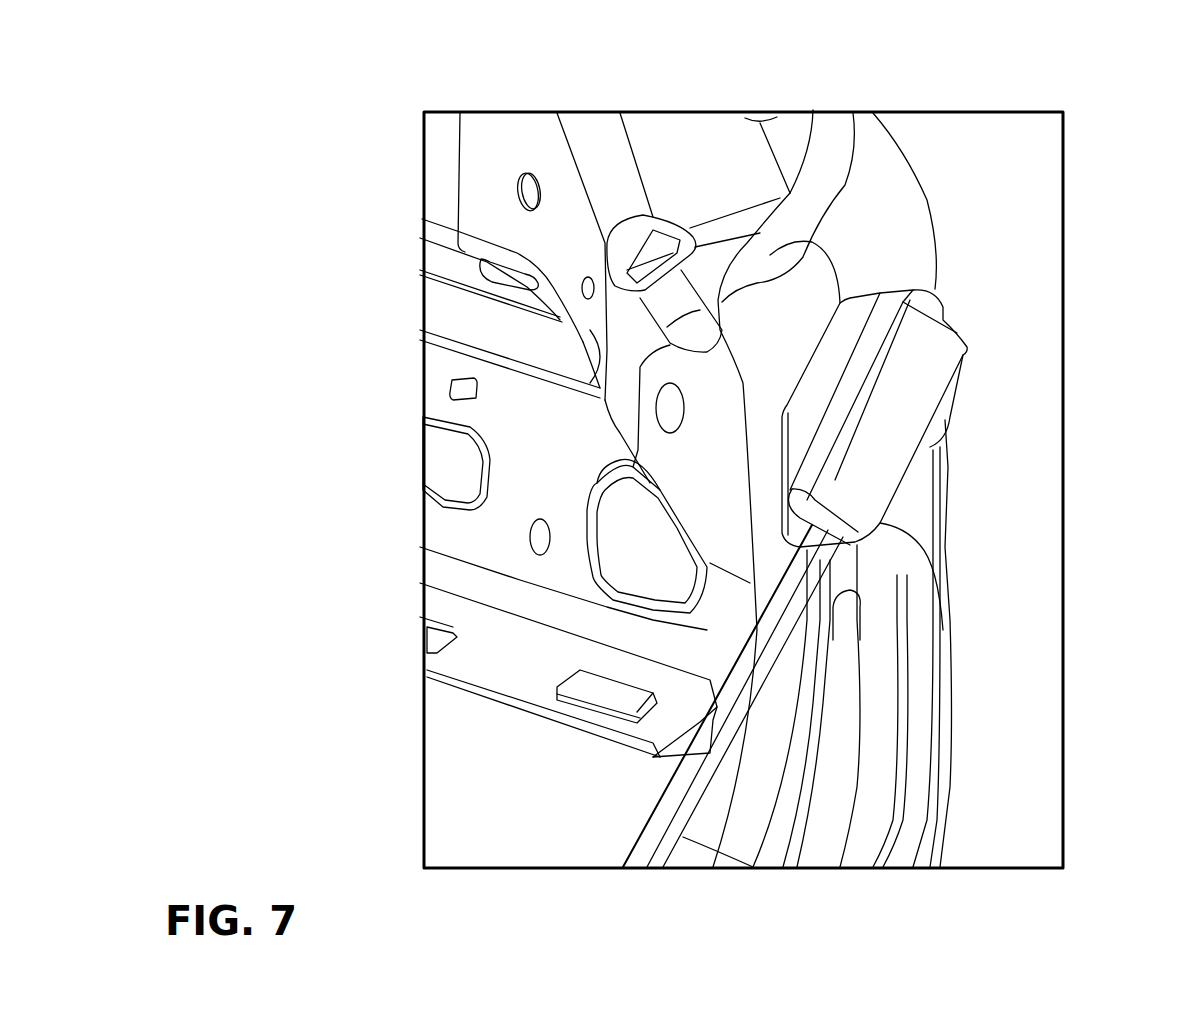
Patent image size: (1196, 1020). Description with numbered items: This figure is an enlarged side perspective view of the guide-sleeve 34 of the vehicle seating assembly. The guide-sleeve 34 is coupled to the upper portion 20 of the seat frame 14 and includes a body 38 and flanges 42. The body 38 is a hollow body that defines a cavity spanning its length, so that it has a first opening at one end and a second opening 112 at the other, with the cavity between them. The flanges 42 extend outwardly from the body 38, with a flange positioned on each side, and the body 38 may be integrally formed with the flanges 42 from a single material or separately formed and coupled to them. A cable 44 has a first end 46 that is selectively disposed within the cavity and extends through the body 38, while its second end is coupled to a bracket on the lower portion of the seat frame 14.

The seat frame 14 is at (770, 253).
The upper portion 20 is at (807, 298).
The guide-sleeve 34 is at (938, 298).
The body 38 is at (928, 358).
The flanges 42 is at (925, 442).
The second opening 112 is at (775, 584).
The first end 46 is at (813, 620).
The cable 44 is at (822, 552).